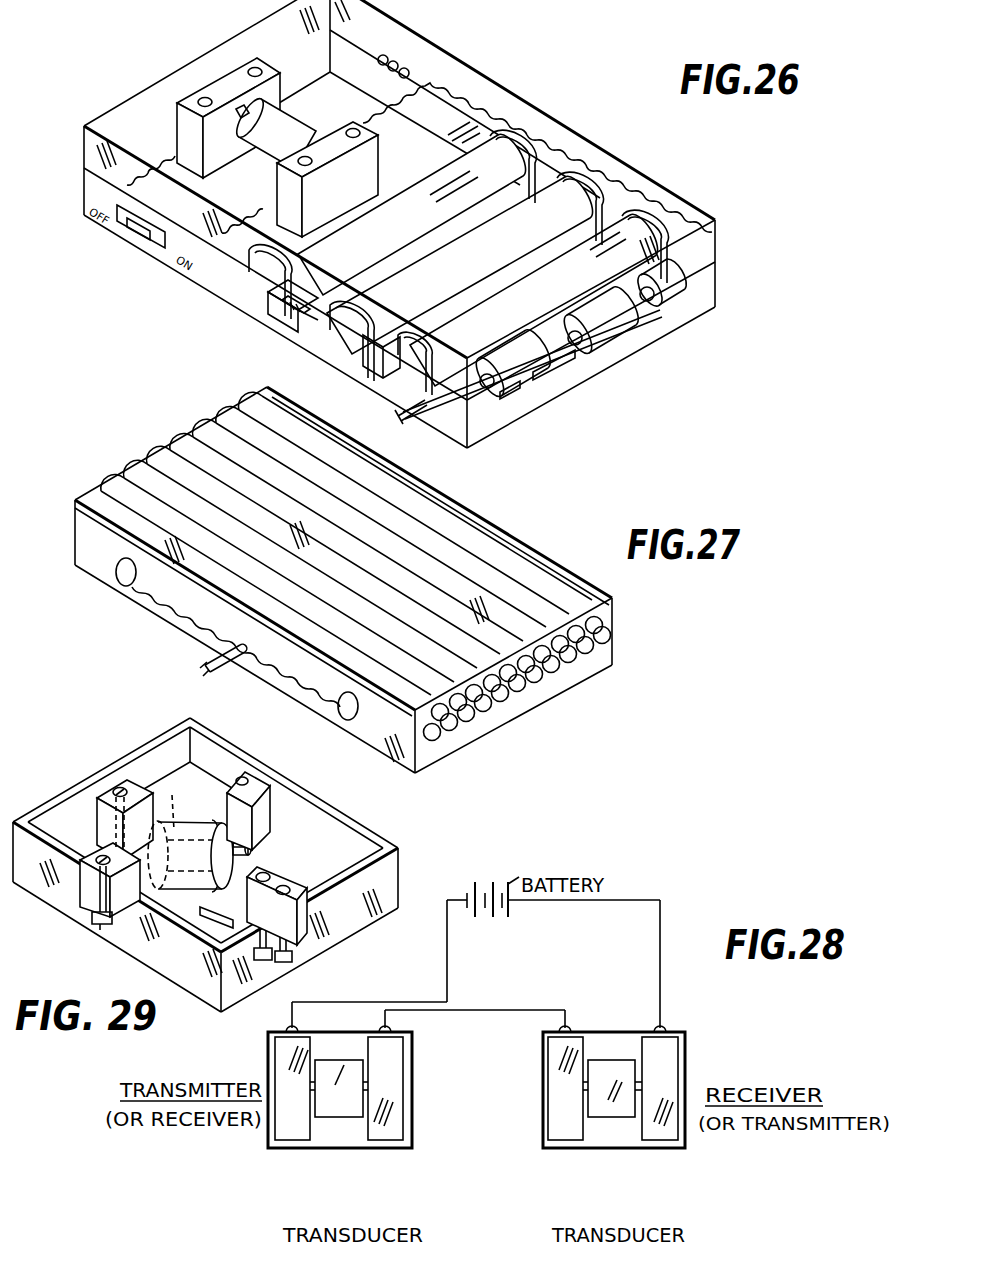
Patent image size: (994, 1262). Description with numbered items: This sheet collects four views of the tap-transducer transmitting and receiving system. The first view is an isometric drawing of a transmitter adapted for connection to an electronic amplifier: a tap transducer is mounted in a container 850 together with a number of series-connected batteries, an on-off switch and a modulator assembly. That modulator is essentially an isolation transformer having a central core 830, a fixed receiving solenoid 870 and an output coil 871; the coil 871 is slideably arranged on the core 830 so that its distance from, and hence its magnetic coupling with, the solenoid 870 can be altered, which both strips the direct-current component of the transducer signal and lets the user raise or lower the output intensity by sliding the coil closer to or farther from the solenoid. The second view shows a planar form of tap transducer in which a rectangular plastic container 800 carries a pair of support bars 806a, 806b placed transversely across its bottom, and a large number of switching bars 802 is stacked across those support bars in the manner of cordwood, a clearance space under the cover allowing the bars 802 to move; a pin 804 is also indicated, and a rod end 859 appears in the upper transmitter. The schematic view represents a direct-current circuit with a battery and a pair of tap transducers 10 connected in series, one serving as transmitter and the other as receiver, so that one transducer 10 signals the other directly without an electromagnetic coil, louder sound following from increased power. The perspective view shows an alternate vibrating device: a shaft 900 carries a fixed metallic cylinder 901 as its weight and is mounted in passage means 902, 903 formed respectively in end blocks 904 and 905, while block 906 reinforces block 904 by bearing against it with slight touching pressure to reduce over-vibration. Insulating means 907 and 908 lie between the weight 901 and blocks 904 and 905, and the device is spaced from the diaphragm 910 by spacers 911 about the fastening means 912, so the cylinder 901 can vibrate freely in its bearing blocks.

In FIG. 28, the transducer 10 is at (346, 1165).
In FIG. 27, the rectangular plastic container 800 is at (165, 433).
In FIG. 27, the switching bars 802 is at (622, 656).
In FIG. 27, the pin 804 is at (231, 660).
In FIG. 27, the support bar 806a is at (352, 720).
In FIG. 27, the support bar 806b is at (125, 573).
In FIG. 26, the central core 830 is at (480, 393).
In FIG. 26, the container 850 is at (290, 330).
In FIG. 26, the rod end 859 is at (423, 412).
In FIG. 26, the receiving solenoid 870 is at (657, 303).
In FIG. 26, the output coil 871 is at (513, 370).
In FIG. 29, the shaft 900 is at (170, 876).
In FIG. 29, the metallic cylinder 901 is at (250, 850).
In FIG. 29, the passage means 902 is at (172, 812).
In FIG. 29, the passage means 903 is at (230, 910).
In FIG. 29, the end block 904 is at (258, 795).
In FIG. 29, the end block 905 is at (290, 884).
In FIG. 29, the block 906 is at (137, 788).
In FIG. 29, the insulating means 907 is at (215, 830).
In FIG. 29, the insulating means 908 is at (245, 852).
In FIG. 29, the diaphragm 910 is at (82, 848).
In FIG. 29, the spacers 911 is at (115, 853).
In FIG. 29, the fastening means 912 is at (85, 795).